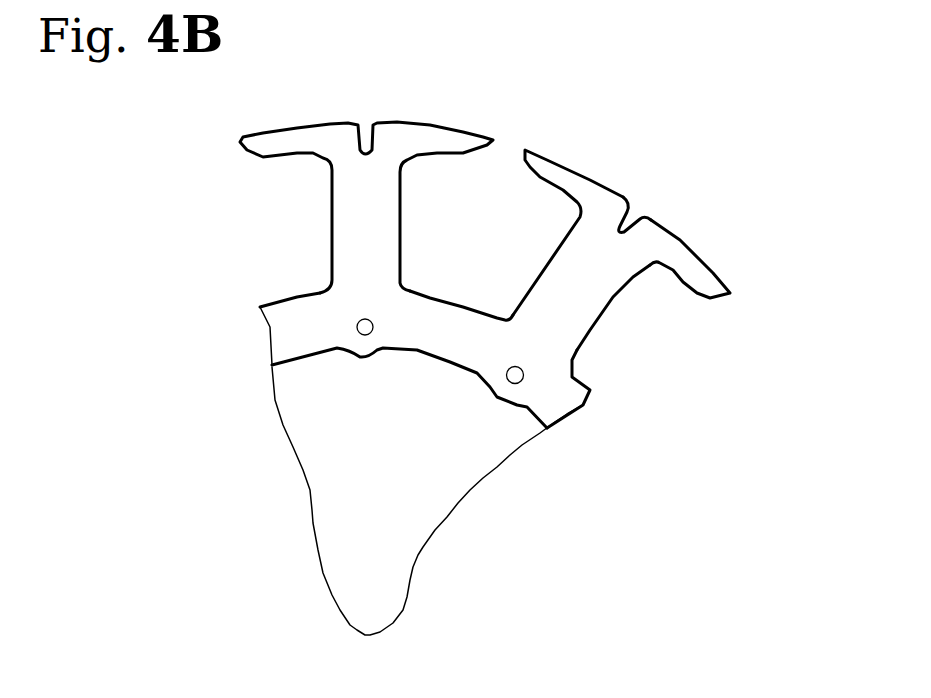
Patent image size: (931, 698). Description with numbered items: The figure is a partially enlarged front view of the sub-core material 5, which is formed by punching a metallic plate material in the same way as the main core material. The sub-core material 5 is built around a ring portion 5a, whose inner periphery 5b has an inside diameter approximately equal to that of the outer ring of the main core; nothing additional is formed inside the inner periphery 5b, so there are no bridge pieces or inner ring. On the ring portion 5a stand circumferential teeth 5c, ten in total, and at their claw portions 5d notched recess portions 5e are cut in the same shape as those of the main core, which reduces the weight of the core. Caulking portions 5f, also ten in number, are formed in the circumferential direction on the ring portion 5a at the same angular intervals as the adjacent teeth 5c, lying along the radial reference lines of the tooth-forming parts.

The sub-core material 5 is at (596, 105).
The ring portion 5a is at (560, 400).
The inner periphery 5b is at (537, 414).
The teeth 5c is at (437, 117).
The claw portions 5d is at (703, 277).
The notched recess portions 5e is at (640, 208).
The caulking portions 5f is at (357, 327).